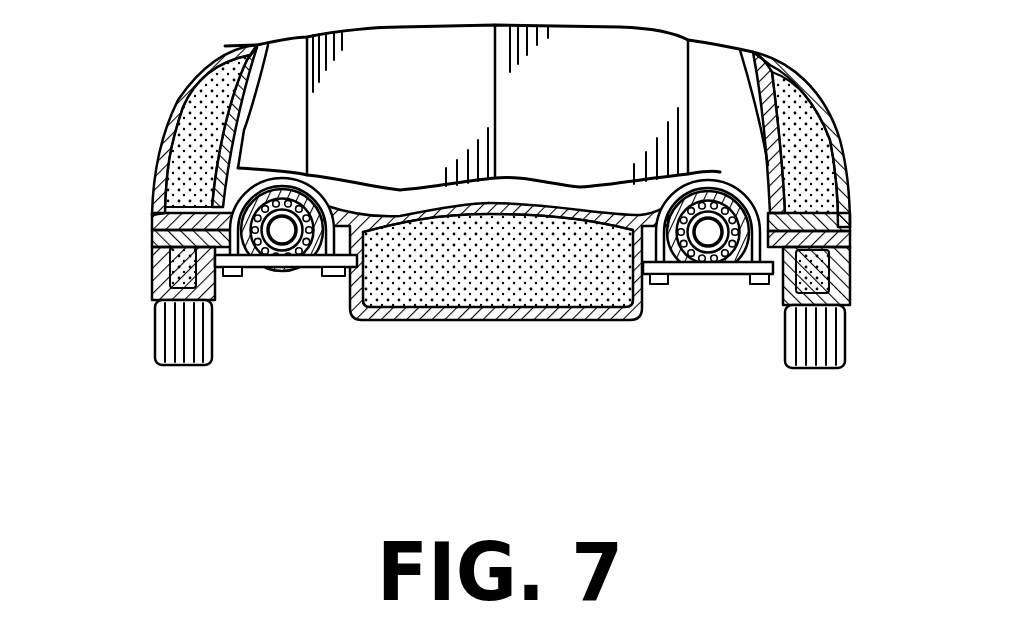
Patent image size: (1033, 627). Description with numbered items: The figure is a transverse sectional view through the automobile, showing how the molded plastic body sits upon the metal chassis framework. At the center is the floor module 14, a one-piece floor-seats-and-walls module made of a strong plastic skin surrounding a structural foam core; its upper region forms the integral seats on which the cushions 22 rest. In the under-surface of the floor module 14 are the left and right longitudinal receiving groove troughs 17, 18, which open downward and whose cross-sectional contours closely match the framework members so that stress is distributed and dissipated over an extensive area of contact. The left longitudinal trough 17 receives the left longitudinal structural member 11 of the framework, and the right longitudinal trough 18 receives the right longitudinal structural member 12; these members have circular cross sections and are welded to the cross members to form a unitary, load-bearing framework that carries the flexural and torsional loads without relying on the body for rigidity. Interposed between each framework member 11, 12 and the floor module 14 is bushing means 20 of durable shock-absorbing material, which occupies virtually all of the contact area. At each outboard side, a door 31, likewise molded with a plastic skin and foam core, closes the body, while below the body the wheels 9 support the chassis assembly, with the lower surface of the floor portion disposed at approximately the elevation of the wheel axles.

The wheels 9 is at (155, 343).
The left longitudinal structural member 11 is at (713, 264).
The right longitudinal structural member 12 is at (290, 270).
The floor module 14 is at (163, 270).
The left longitudinal receiving groove trough 17 is at (700, 285).
The right longitudinal receiving groove trough 18 is at (260, 272).
The bushing means 20 is at (300, 268).
The cushions 22 is at (410, 187).
The doors 31 is at (163, 142).